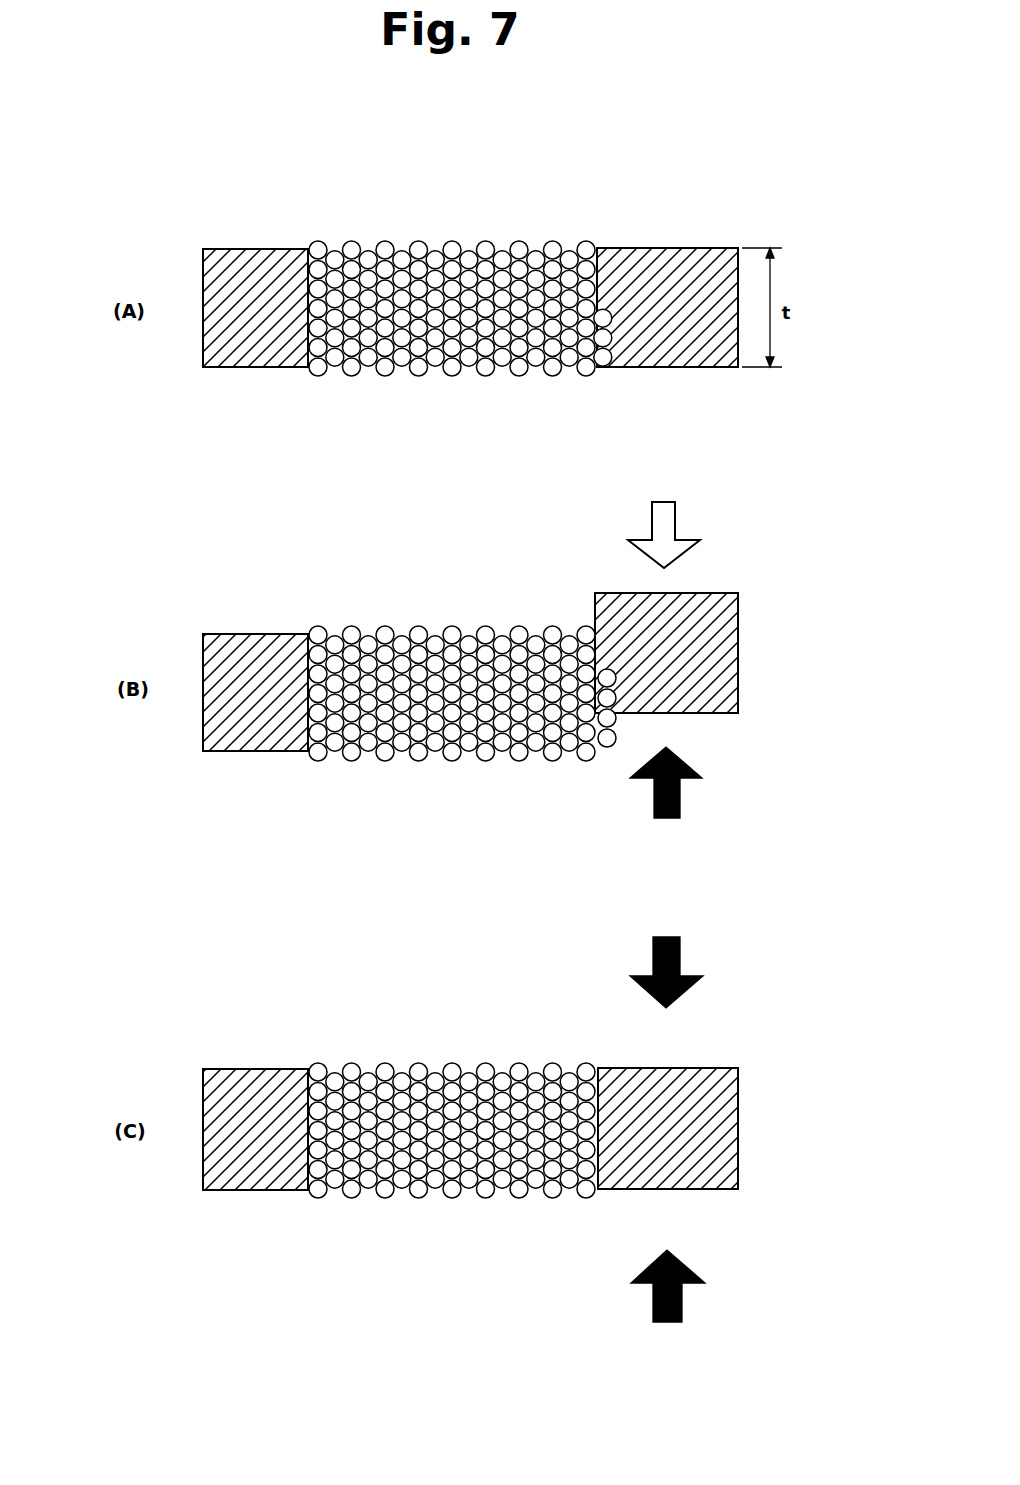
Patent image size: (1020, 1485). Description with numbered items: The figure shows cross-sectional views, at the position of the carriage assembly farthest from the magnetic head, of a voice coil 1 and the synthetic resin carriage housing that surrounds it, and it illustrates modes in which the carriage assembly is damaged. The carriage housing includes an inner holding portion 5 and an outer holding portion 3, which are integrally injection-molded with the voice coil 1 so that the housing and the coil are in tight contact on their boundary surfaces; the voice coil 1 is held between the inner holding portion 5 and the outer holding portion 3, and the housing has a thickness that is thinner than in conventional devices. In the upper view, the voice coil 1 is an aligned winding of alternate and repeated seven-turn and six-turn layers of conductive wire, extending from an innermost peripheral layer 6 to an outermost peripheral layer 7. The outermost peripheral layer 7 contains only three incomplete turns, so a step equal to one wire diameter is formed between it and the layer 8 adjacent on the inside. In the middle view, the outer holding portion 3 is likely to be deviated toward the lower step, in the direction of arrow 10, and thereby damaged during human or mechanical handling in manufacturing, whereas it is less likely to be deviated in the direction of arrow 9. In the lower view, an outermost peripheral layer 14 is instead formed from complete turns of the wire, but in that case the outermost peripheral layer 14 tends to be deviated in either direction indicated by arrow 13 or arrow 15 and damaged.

The voice coil 1 is at (447, 220).
The outer holding portion 3 is at (662, 248).
The inner holding portion 5 is at (246, 250).
The innermost peripheral layer 6 is at (316, 390).
The outermost peripheral layer 7 is at (605, 381).
The layer adjacent to the outermost peripheral layer 8 is at (587, 388).
The arrow 9 is at (675, 520).
The arrow 10 is at (680, 791).
The arrow 13 is at (680, 962).
The outermost peripheral layer 14 is at (588, 1056).
The arrow 15 is at (682, 1308).